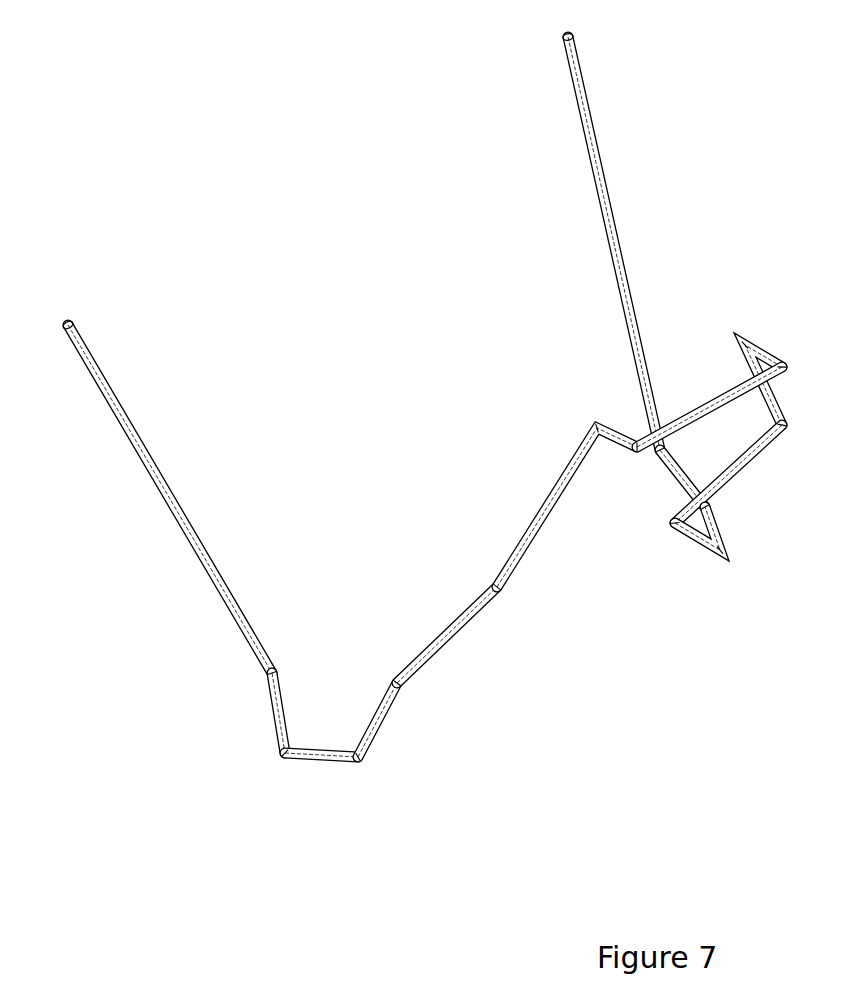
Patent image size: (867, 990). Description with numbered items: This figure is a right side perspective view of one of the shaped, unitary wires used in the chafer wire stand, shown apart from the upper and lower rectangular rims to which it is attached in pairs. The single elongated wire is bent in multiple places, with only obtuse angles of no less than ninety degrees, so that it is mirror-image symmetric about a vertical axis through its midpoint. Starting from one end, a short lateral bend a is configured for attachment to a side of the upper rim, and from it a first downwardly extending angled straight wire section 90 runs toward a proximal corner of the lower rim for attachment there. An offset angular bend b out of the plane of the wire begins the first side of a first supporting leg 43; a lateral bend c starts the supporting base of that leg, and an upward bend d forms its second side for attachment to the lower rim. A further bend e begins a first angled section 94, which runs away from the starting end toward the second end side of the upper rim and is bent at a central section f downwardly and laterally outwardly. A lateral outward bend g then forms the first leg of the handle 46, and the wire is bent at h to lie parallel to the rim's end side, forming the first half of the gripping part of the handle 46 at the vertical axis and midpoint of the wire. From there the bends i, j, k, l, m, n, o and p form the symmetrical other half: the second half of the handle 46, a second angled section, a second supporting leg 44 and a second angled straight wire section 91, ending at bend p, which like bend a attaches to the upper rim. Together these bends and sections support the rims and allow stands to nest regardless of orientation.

The first downwardly extending angled straight wire section 90 is at (186, 513).
The second angled straight wire section 91 is at (620, 247).
The first supporting leg 43 is at (330, 760).
The first angled section 94 is at (470, 620).
The handle 46 is at (701, 406).
The second supporting leg 44 is at (717, 527).
The short lateral bend a is at (63, 336).
The offset angular bend b is at (262, 681).
The lateral bend c is at (282, 760).
The upward bend d is at (360, 769).
The bend forming first angled section e is at (398, 690).
The central bend of first angled section f is at (500, 594).
The lateral outward bend g is at (597, 424).
The handle bend h is at (636, 454).
The mirror-image bend i is at (789, 367).
The mirror-image bend j is at (744, 340).
The mirror-image bend k is at (788, 428).
The mirror-image bend l is at (672, 530).
The mirror-image bend m is at (724, 556).
The mirror-image bend n is at (712, 507).
The mirror-image bend o is at (664, 452).
The mirror-image end bend p is at (577, 42).